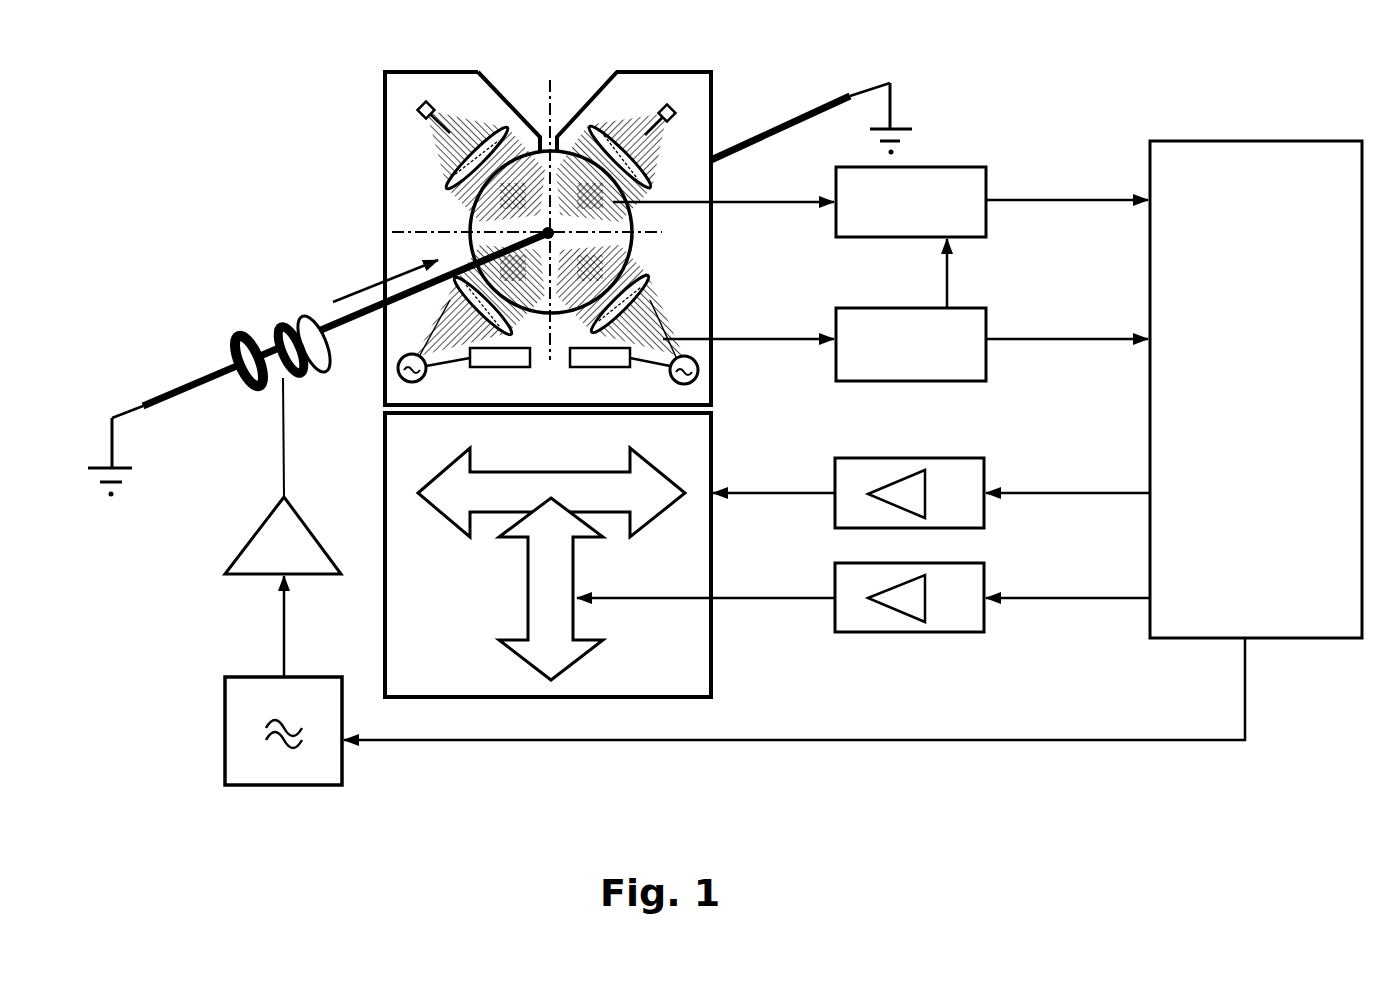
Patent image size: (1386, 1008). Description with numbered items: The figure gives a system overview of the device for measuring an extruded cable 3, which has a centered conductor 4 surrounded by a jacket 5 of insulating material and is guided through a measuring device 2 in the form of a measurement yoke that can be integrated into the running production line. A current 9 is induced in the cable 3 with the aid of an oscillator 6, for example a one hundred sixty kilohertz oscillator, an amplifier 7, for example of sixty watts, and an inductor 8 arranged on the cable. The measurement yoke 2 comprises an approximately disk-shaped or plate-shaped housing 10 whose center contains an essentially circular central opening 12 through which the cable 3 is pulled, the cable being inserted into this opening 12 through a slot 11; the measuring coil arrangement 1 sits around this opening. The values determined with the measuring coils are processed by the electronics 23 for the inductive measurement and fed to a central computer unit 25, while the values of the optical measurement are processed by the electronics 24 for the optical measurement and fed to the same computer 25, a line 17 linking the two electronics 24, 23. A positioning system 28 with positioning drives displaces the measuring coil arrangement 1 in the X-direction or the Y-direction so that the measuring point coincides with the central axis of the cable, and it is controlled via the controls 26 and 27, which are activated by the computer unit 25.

The measuring coil arrangement 1 is at (625, 267).
The measuring device 2 is at (400, 112).
The cable 3 is at (762, 132).
The conductor 4 is at (123, 412).
The jacket 5 is at (162, 393).
The oscillator 6 is at (245, 757).
The amplifier 7 is at (262, 550).
The inductor 8 is at (240, 335).
The current 9 is at (385, 277).
The housing 10 is at (593, 232).
The slot 11 is at (553, 137).
The central opening 12 is at (473, 205).
The control line 17 is at (947, 278).
The electronics for the inductive measurement 23 is at (938, 190).
The electronics for the optical measurement 24 is at (890, 372).
The central computer unit 25 is at (1252, 402).
The control 26 is at (955, 490).
The control 27 is at (947, 613).
The positioning system 28 is at (548, 555).